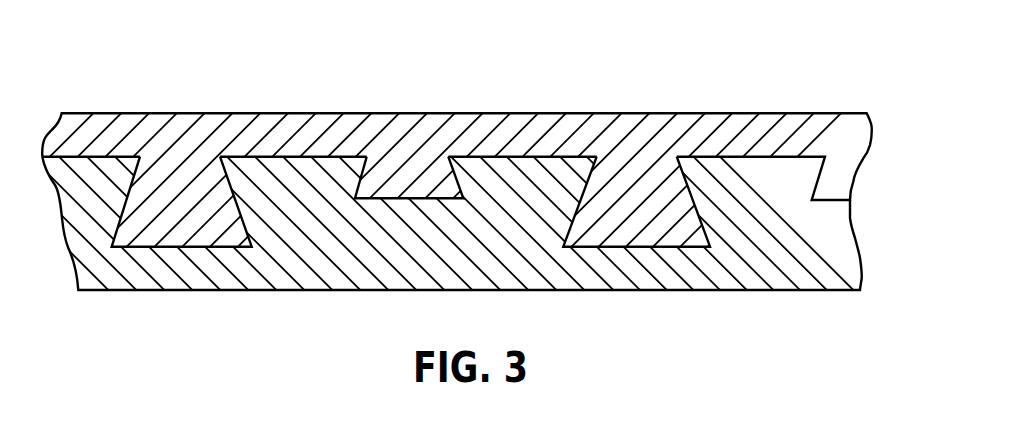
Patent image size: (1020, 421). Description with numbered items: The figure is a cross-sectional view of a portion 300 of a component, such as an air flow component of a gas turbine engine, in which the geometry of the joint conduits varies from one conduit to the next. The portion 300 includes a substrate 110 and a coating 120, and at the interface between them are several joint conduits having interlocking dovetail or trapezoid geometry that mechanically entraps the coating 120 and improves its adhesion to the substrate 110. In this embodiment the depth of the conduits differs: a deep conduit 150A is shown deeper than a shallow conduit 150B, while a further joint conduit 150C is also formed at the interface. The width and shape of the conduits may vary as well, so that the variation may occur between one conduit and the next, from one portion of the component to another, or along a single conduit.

The portion of a component 300 is at (124, 57).
The coating 120 is at (710, 127).
The substrate 110 is at (297, 273).
The deep conduit 150A is at (653, 227).
The shallow conduit 150B is at (408, 187).
The joint conduit 150C is at (178, 233).